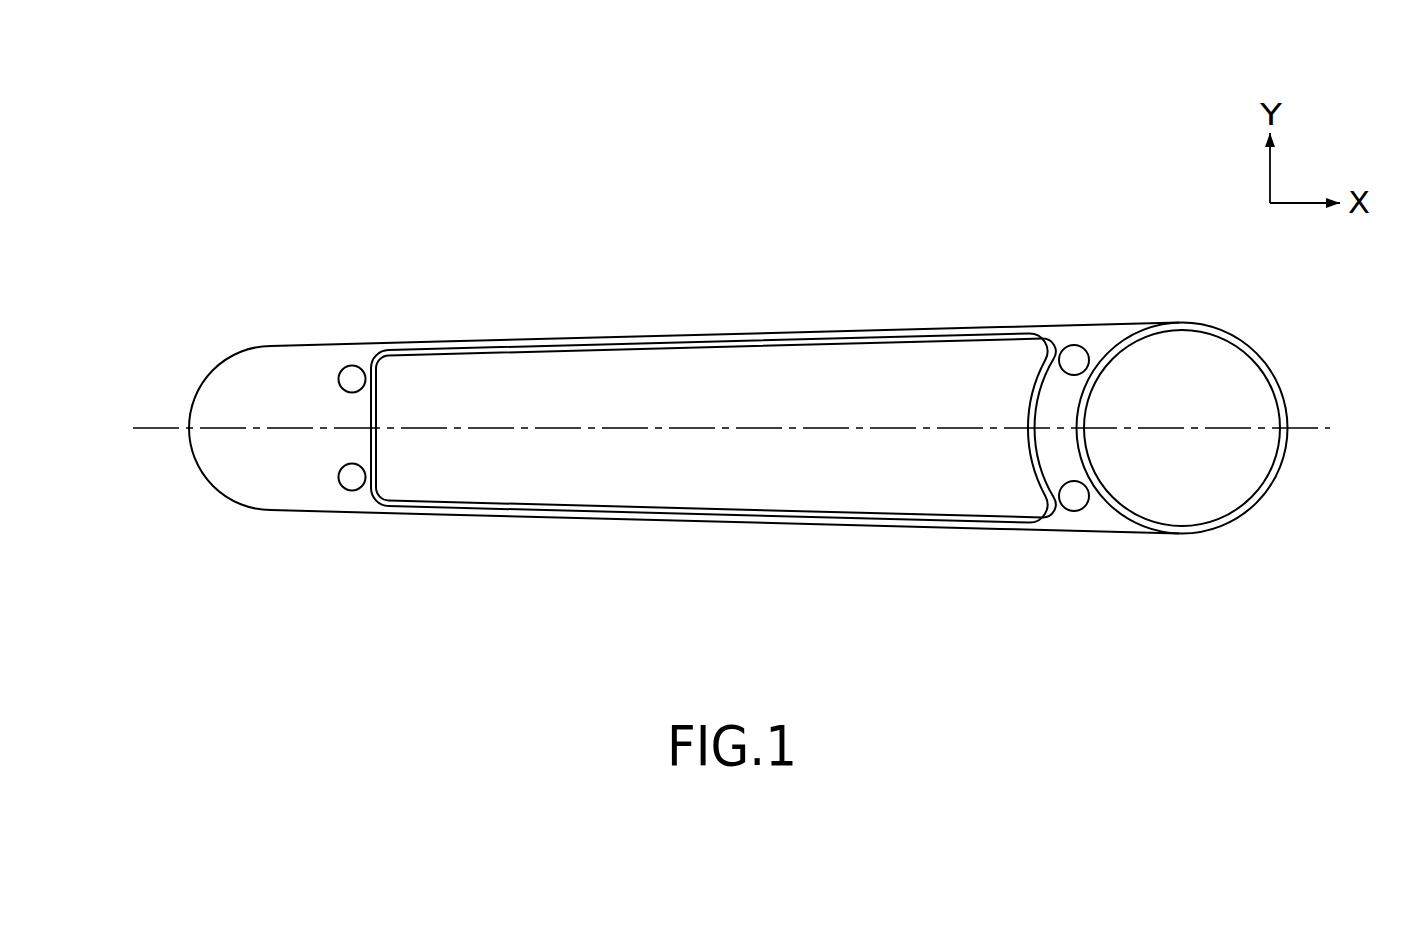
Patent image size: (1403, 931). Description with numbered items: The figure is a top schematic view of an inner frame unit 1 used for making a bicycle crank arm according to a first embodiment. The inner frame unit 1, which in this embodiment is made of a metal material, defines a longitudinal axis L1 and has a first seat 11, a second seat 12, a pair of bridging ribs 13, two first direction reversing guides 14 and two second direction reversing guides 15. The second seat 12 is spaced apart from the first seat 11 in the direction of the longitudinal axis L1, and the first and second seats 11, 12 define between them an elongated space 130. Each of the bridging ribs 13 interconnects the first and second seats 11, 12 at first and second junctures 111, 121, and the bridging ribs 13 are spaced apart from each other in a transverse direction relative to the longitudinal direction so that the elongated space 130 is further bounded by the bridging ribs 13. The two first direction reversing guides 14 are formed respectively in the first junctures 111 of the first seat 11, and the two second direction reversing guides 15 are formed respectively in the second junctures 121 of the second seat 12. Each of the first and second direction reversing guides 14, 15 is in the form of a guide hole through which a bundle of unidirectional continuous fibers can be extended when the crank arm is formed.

The inner frame unit 1 is at (915, 287).
The first seat 11 is at (1232, 522).
The first junctures 111 is at (1053, 326).
The second seat 12 is at (253, 482).
The second junctures 121 is at (383, 343).
The bridging ribs 13 is at (591, 338).
The elongated space 130 is at (799, 390).
The first direction reversing guide 14 is at (1083, 348).
The second direction reversing guide 15 is at (344, 367).
The longitudinal axis L1 is at (750, 429).